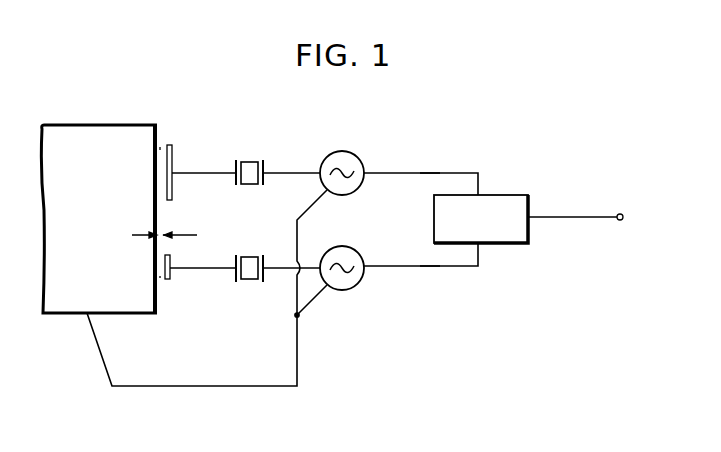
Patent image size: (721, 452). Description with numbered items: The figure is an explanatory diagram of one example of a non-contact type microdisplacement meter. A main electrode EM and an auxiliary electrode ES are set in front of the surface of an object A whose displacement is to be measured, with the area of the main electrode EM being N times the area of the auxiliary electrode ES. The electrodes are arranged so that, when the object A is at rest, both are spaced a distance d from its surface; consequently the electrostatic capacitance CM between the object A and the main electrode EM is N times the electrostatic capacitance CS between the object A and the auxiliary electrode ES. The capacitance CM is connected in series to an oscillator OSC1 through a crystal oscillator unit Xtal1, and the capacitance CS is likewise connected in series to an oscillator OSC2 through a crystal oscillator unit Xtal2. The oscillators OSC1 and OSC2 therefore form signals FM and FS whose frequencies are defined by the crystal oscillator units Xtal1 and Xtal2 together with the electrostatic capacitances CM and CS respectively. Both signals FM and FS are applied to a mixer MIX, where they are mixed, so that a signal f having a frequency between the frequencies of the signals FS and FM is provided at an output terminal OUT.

The object A is at (100, 125).
The electrostatic capacitance CM is at (160, 146).
The main electrode EM is at (201, 172).
The electrostatic capacitance CS is at (160, 276).
The auxiliary electrode ES is at (200, 277).
The distance d is at (166, 239).
The crystal oscillator unit Xtal1 is at (272, 159).
The crystal oscillator unit Xtal2 is at (271, 255).
The oscillator OSC1 is at (340, 152).
The oscillator OSC2 is at (340, 247).
The signal FM is at (436, 160).
The signal FS is at (434, 280).
The mixer MIX is at (481, 219).
The signal f is at (572, 207).
The output terminal OUT is at (645, 219).